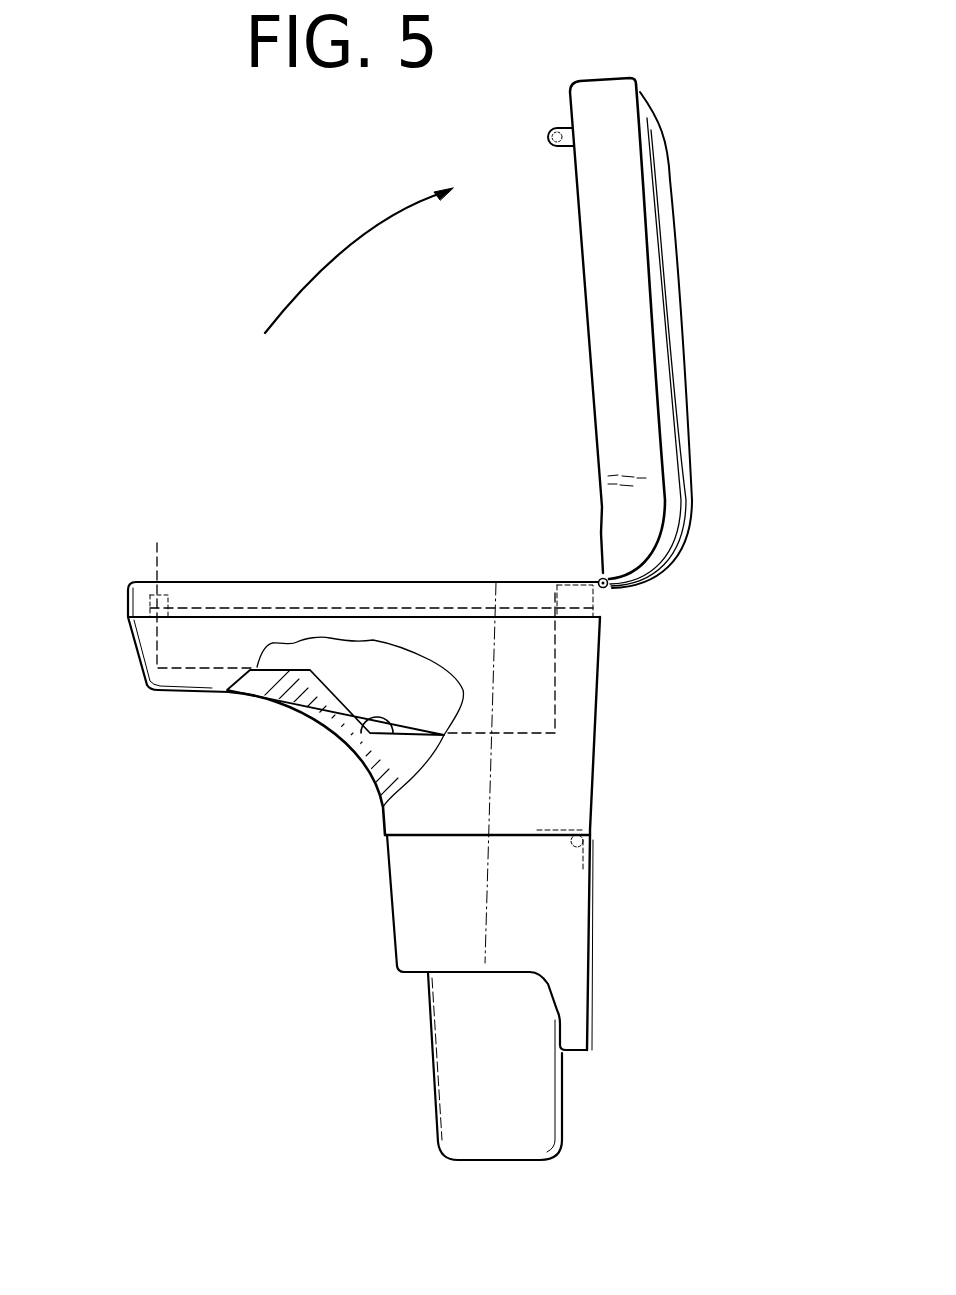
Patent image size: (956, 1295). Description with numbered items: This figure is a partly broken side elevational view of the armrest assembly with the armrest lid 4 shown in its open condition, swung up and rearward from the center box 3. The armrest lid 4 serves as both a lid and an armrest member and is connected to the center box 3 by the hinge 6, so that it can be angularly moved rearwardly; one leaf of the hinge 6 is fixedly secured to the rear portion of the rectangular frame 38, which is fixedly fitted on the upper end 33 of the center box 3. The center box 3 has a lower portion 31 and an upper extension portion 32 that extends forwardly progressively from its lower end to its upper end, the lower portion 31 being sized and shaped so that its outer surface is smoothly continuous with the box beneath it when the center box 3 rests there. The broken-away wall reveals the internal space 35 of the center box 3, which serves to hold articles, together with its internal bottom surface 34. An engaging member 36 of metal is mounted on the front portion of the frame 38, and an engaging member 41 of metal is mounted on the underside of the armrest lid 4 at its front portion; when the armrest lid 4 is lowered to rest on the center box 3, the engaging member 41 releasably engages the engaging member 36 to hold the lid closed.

The center box 3 is at (398, 837).
The armrest lid 4 is at (680, 287).
The hinge 6 is at (607, 589).
The lower portion 31 is at (442, 817).
The upper extension portion 32 is at (143, 686).
The upper end 33 is at (597, 655).
The internal bottom surface 34 is at (345, 728).
The internal space 35 is at (367, 675).
The engaging member 36 is at (196, 591).
The rectangular frame 38 is at (262, 592).
The engaging member 41 is at (548, 137).